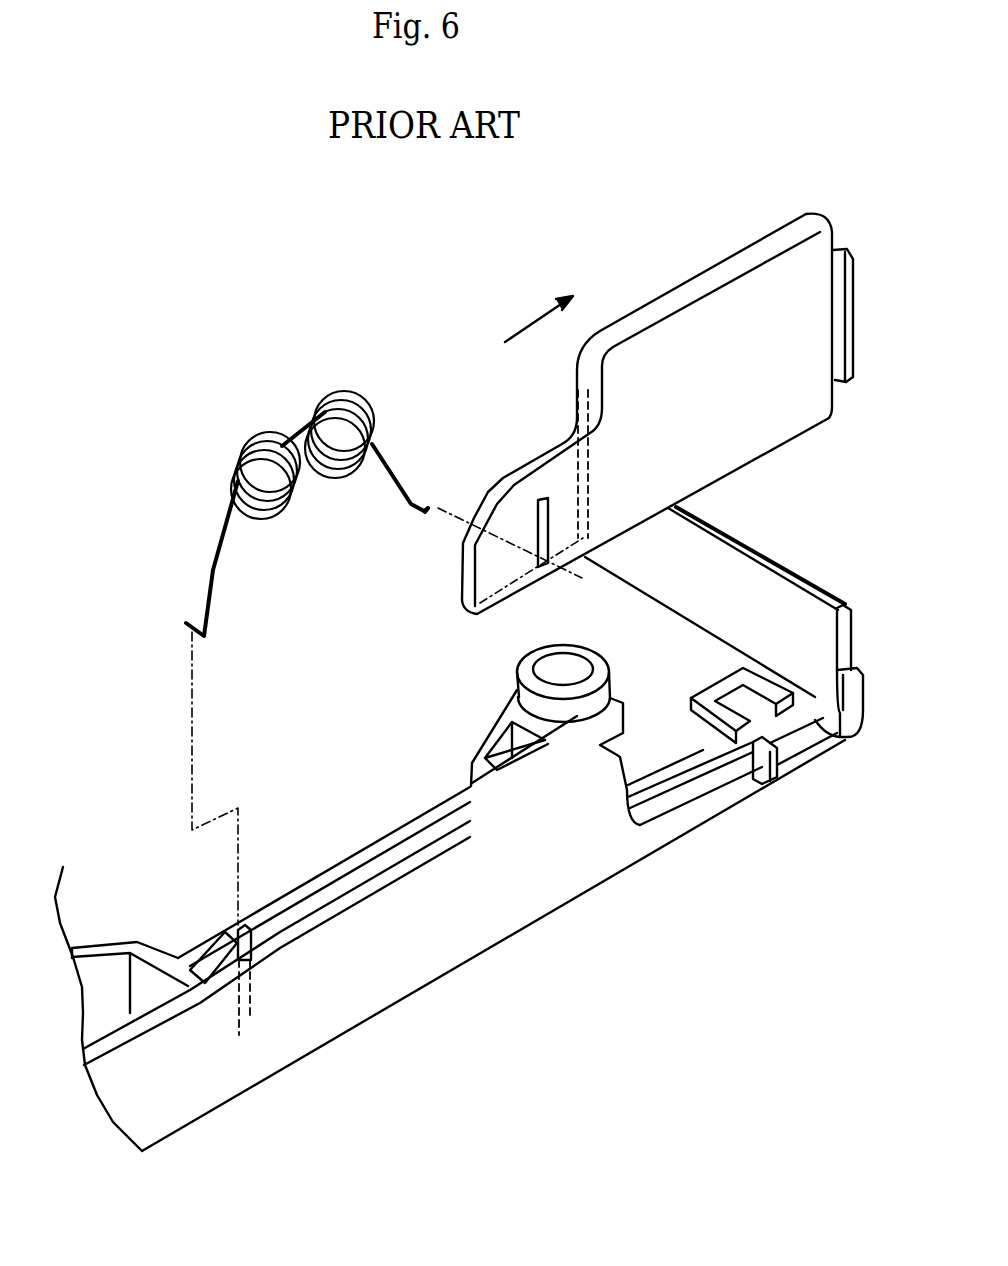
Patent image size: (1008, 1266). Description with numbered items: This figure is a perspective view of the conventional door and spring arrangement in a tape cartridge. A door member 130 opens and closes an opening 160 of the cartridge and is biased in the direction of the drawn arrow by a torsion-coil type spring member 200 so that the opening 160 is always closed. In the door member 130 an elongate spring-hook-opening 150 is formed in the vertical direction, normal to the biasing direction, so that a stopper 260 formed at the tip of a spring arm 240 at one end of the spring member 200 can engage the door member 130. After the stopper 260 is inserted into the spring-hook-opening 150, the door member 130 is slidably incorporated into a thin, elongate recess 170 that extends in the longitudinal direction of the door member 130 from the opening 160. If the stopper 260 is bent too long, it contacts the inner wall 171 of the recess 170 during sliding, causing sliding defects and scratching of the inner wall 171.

The door member 130 is at (623, 295).
The elongate spring-hook-opening 150 is at (548, 537).
The opening 160 is at (673, 731).
The recess 170 is at (572, 747).
The inner wall 171 is at (457, 827).
The spring member 200 is at (293, 380).
The spring arm 240 is at (392, 460).
The stopper 260 is at (432, 516).